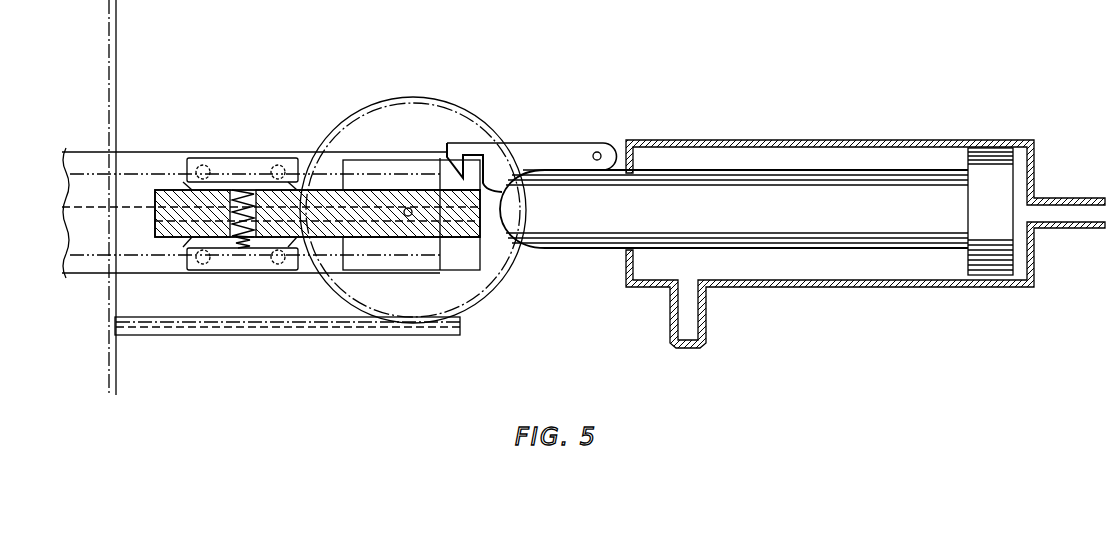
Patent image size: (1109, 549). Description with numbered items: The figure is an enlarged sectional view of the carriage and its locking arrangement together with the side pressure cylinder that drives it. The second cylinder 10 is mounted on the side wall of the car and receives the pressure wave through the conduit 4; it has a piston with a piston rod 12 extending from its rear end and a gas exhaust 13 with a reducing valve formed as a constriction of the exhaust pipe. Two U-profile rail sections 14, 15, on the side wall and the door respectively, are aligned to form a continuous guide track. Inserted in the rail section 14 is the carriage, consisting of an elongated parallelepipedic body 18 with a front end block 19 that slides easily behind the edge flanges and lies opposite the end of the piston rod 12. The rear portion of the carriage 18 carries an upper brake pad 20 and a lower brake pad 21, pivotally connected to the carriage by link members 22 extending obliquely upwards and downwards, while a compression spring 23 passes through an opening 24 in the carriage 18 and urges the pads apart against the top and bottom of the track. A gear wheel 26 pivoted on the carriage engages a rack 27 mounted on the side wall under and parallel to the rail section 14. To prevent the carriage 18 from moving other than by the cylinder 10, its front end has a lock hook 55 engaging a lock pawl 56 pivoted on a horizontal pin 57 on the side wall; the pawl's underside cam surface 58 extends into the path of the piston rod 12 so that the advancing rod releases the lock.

The conduit 4 is at (1070, 198).
The second cylinder 10 is at (797, 140).
The piston rod 12 is at (730, 180).
The gas exhaust 13 is at (706, 335).
The rail section 14 is at (138, 162).
The rail section 15 is at (72, 154).
The carriage body 18 is at (155, 218).
The front end block 19 is at (485, 228).
The upper brake pad 20 is at (222, 165).
The lower brake pad 21 is at (215, 262).
The link members 22 is at (190, 185).
The compression spring 23 is at (243, 249).
The opening 24 is at (253, 195).
The gear wheel 26 is at (492, 281).
The rack 27 is at (283, 335).
The lock hook 55 is at (486, 160).
The lock pawl 56 is at (553, 143).
The horizontal pin 57 is at (600, 152).
The cam surface 58 is at (520, 198).